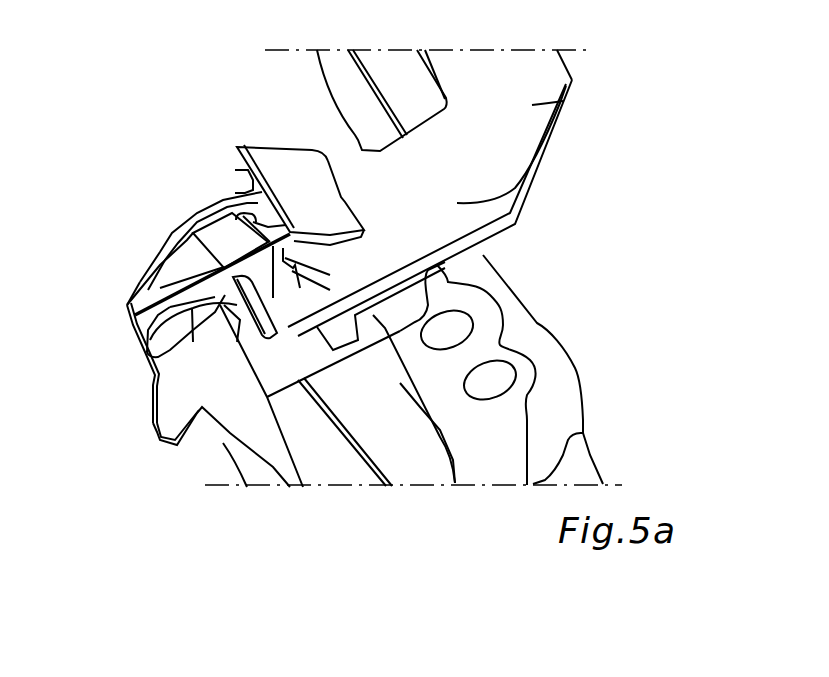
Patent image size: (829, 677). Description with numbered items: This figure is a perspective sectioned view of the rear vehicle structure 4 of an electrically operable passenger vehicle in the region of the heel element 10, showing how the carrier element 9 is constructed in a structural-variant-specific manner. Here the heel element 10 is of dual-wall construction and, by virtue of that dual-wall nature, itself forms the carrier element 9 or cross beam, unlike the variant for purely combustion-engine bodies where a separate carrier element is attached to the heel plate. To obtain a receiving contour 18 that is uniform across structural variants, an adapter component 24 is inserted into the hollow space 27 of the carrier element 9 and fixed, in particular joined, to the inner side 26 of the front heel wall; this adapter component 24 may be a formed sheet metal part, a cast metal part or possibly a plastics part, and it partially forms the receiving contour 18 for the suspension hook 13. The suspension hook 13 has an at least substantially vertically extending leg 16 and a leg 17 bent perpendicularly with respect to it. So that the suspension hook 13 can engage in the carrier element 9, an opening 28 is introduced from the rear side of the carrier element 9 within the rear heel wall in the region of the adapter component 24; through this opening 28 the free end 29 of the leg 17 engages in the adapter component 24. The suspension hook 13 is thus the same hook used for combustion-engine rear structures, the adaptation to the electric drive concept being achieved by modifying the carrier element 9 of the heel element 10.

The base body 4 is at (460, 360).
The carrier element 9 is at (263, 143).
The heel element 10 is at (260, 137).
The suspension hook 13 is at (587, 65).
The vertically extending leg 16 is at (563, 101).
The leg 17 is at (533, 177).
The receiving contour 18 is at (365, 217).
The adapter component 24 is at (191, 243).
The inner side 26 is at (223, 203).
The hollow space 27 is at (128, 318).
The opening 28 is at (297, 332).
The free end 29 is at (155, 357).